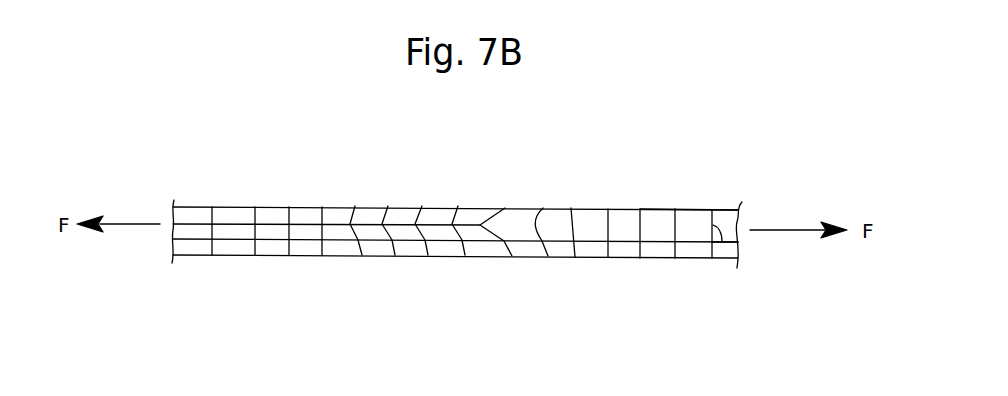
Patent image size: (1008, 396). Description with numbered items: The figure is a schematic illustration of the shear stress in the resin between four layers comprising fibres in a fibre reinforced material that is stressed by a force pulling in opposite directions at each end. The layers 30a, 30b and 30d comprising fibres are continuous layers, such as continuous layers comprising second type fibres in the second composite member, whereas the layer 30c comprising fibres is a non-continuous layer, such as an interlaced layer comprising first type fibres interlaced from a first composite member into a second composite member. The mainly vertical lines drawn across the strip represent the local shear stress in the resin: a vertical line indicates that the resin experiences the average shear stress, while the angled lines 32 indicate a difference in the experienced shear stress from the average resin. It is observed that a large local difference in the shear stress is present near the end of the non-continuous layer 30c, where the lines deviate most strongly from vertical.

The continuous layer comprising fibres 30a is at (562, 258).
The continuous layer comprising fibres 30b is at (625, 242).
The non-continuous layer comprising fibres 30c is at (305, 227).
The continuous layer comprising fibres 30d is at (663, 208).
The lines indicating difference in the experienced stress from the average resin 32 is at (722, 258).